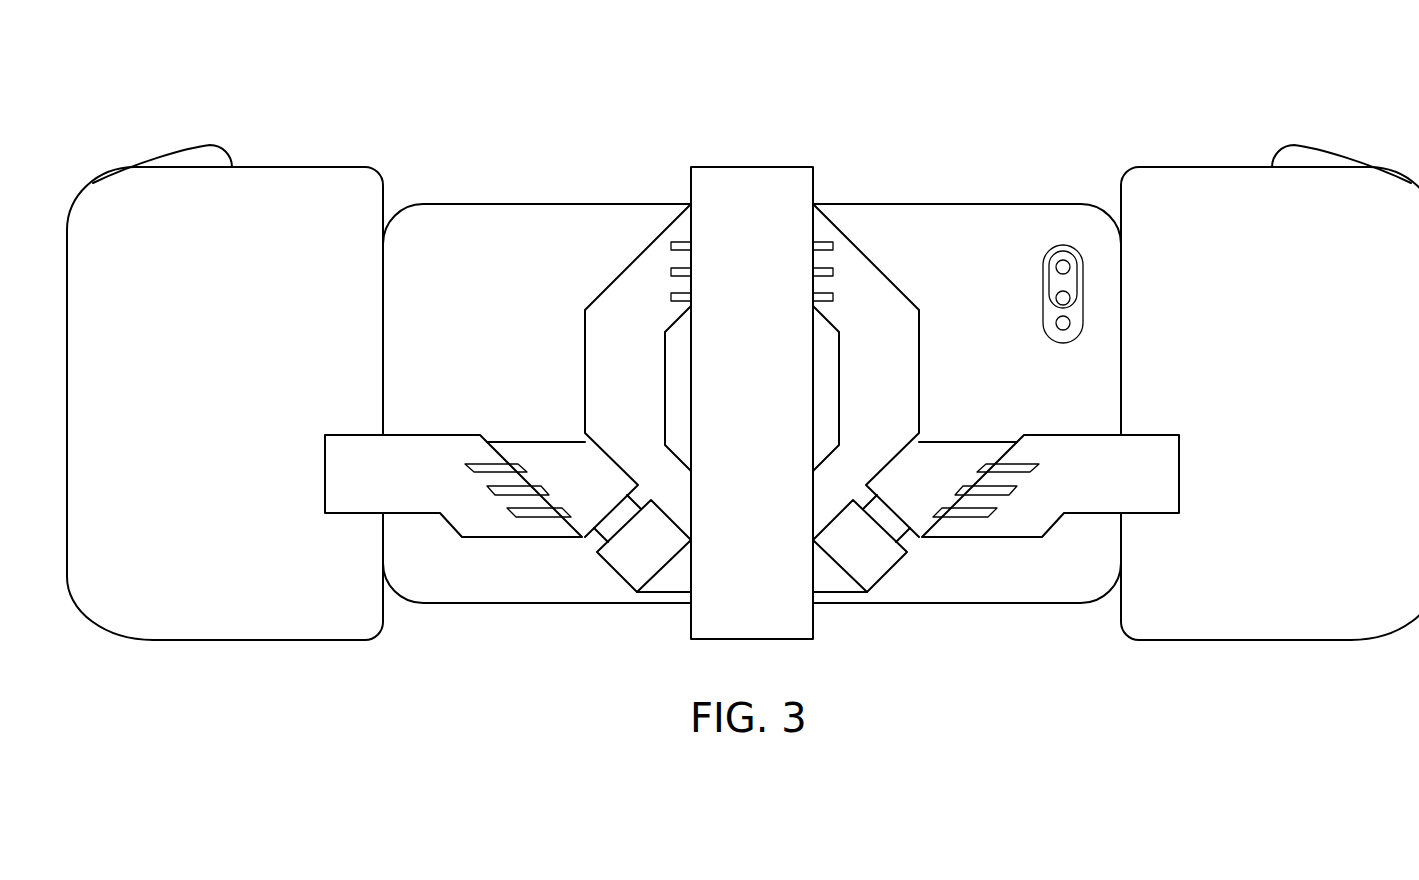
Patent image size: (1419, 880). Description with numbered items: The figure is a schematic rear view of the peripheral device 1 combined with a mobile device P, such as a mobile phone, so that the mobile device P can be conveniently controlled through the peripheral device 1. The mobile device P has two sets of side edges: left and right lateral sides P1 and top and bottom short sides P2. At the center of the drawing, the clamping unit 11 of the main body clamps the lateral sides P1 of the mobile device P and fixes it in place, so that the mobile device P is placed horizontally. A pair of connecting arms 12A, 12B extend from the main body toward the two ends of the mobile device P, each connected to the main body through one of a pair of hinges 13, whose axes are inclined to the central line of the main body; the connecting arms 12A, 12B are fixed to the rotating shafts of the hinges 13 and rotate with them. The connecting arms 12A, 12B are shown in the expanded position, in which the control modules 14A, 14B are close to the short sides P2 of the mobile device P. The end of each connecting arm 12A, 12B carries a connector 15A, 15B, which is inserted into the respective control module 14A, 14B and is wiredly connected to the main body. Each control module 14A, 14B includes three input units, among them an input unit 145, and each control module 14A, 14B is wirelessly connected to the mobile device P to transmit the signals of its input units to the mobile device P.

The peripheral device 1 is at (101, 124).
The clamping unit 11 is at (751, 157).
The connecting arm 12A is at (493, 522).
The connecting arm 12B is at (1012, 522).
The hinge 13 is at (548, 460).
The control module 14A is at (308, 188).
The control module 14B is at (1190, 190).
The input unit 145 is at (207, 157).
The connector 15A is at (352, 513).
The connector 15B is at (1152, 513).
The mobile device P is at (516, 196).
The lateral side P1 is at (574, 203).
The short side P2 is at (383, 265).